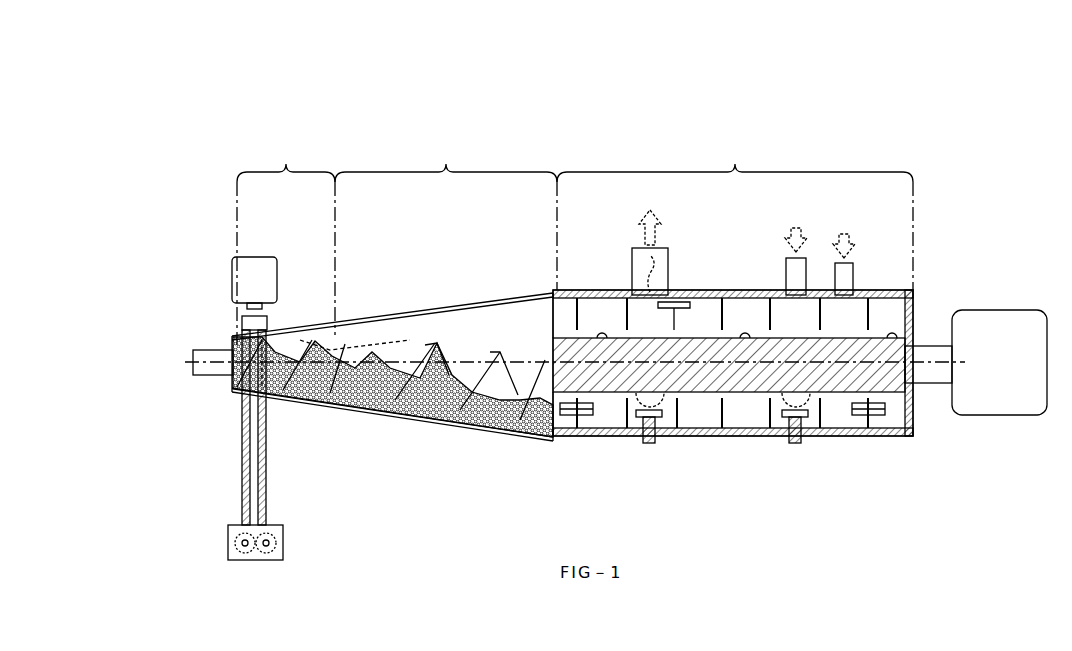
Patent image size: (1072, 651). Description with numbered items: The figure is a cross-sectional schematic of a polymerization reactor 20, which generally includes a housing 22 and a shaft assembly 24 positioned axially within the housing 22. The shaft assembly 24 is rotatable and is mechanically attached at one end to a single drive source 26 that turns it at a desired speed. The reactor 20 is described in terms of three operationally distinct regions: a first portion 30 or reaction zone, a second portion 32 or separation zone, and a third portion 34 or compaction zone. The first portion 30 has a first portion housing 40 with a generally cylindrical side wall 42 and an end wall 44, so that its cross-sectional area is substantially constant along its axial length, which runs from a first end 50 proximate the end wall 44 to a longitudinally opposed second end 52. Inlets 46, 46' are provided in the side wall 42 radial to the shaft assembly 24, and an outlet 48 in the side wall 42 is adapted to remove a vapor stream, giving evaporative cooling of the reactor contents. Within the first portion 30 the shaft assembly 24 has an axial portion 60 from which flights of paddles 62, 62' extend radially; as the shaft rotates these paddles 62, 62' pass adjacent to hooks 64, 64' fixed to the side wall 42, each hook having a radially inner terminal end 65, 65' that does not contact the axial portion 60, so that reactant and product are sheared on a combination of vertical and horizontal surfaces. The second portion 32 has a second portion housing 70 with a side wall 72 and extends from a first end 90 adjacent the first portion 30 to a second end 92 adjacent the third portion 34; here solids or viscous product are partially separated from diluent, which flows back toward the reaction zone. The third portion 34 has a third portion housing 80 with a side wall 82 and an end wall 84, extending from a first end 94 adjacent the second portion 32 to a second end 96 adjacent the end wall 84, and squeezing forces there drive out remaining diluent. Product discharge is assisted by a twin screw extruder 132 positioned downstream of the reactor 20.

The reactor 20 is at (343, 105).
The housing 22 is at (600, 289).
The shaft assembly 24 is at (535, 333).
The drive source 26 is at (990, 311).
The first portion 30 is at (735, 215).
The second portion 32 is at (446, 238).
The third portion 34 is at (286, 243).
The first portion housing 40 is at (700, 290).
The side wall 42 is at (858, 437).
The end wall 44 is at (915, 412).
The inlet 46 is at (830, 249).
The inlet 46' is at (782, 245).
The outlet 48 is at (667, 262).
The first end 50 is at (908, 310).
The second end 52 is at (560, 296).
The axial portion 60 is at (614, 395).
The paddle 62 is at (722, 385).
The paddle 62' is at (722, 445).
The hook 64 is at (635, 451).
The hook 64' is at (781, 451).
The radially inner terminal end 65 is at (658, 435).
The radially inner terminal end 65' is at (805, 435).
The second portion housing 70 is at (450, 312).
The side wall 72 is at (440, 412).
The third portion housing 80 is at (313, 398).
The side wall 82 is at (284, 395).
The end wall 84 is at (233, 383).
The first end 90 is at (541, 300).
The second end 92 is at (350, 336).
The first end 94 is at (318, 336).
The second end 96 is at (235, 337).
The twin screw extruder 132 is at (283, 541).